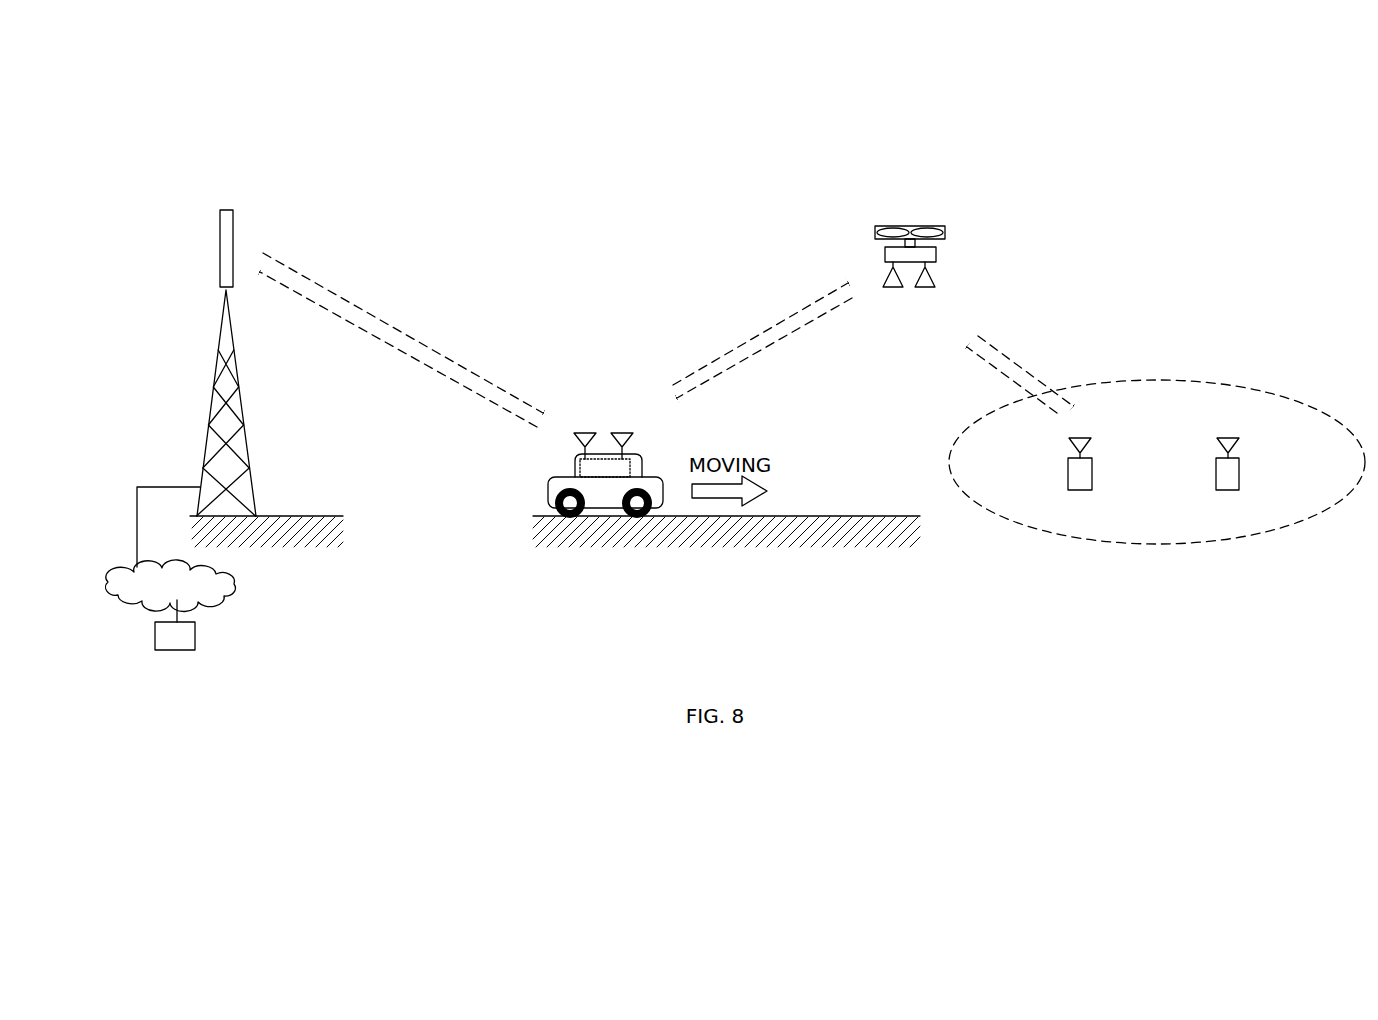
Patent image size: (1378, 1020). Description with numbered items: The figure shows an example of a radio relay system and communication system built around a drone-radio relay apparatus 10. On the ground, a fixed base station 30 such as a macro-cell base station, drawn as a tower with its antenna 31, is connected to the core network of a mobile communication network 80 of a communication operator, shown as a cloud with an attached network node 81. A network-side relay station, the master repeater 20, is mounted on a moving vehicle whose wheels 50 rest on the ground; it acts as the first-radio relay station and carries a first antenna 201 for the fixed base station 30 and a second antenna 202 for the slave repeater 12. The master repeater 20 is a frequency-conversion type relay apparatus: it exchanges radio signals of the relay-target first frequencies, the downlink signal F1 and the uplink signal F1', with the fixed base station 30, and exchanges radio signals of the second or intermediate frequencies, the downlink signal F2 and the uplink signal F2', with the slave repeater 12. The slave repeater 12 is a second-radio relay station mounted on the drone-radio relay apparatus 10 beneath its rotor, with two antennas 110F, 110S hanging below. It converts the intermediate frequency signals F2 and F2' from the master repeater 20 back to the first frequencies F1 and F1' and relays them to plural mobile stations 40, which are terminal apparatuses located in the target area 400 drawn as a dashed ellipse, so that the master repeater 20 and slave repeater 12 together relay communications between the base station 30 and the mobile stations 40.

The drone-radio relay apparatus 10 is at (919, 267).
The slave repeater 12 is at (936, 253).
The first antenna 110F is at (893, 285).
The second antenna 110S is at (926, 285).
The master repeater 20 is at (605, 490).
The first antenna 201 is at (585, 432).
The second antenna 202 is at (622, 432).
The vehicle wheels / moving body 50 is at (591, 509).
The fixed base station 30 is at (196, 336).
The base station antenna 31 is at (220, 240).
The mobile communication network 80 is at (232, 590).
The server 81 is at (195, 637).
The mobile station 40 is at (1080, 490).
The target area 400 is at (975, 504).
The first frequency downlink signal F1 is at (668, 333).
The first frequency uplink signal F1' is at (658, 349).
The second frequency downlink signal F2 is at (760, 334).
The second frequency uplink signal F2' is at (764, 348).